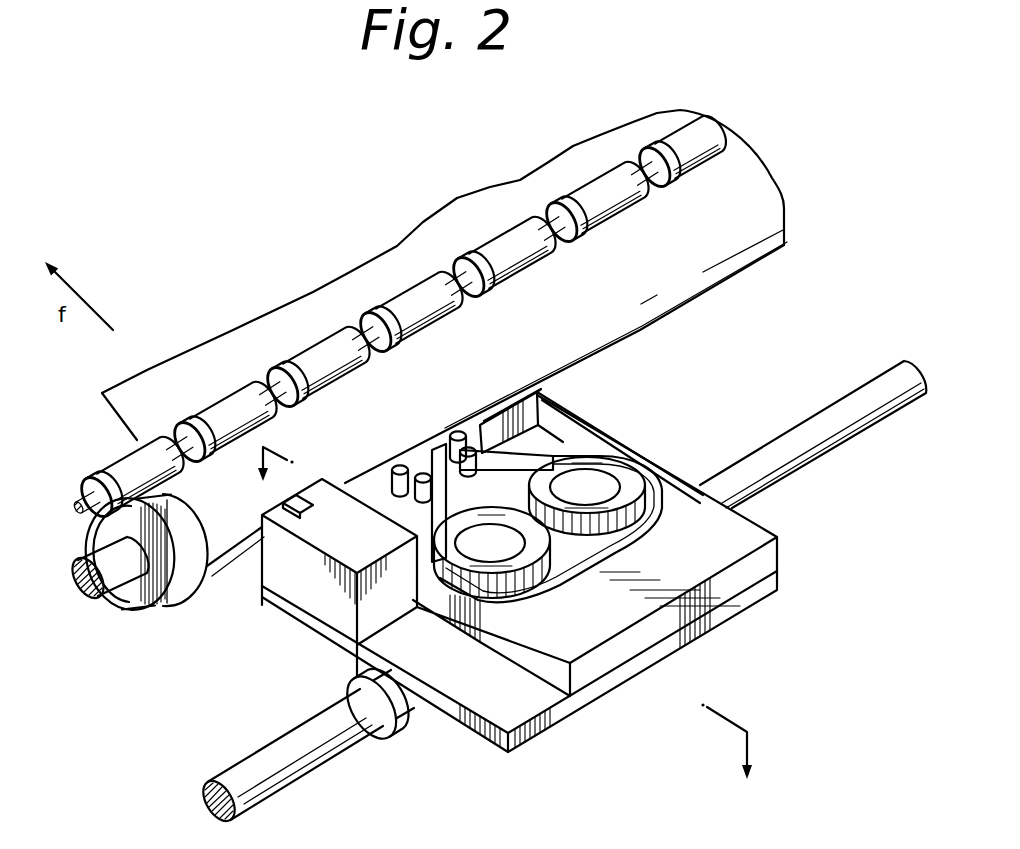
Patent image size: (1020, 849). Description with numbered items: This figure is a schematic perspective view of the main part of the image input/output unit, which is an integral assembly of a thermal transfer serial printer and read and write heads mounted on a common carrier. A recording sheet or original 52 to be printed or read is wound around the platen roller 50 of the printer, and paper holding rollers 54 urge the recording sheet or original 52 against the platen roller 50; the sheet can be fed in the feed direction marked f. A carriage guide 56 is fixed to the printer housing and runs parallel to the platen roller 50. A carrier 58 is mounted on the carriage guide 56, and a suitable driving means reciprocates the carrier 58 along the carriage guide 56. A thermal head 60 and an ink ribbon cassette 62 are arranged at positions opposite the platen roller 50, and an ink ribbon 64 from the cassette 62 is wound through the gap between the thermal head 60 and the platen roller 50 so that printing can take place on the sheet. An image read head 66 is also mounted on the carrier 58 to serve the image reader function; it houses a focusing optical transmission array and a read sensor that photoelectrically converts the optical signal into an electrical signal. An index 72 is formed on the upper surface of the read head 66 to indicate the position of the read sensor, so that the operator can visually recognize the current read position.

The platen roller 50 is at (146, 614).
The recording sheet or original 52 is at (213, 360).
The paper holding rollers 54 is at (320, 357).
The carriage guide 56 is at (333, 733).
The carrier 58 is at (578, 702).
The thermal head 60 is at (437, 462).
The ink ribbon cassette 62 is at (747, 528).
The ink ribbon 64 is at (553, 457).
The image read head 66 is at (307, 578).
The index 72 is at (284, 506).